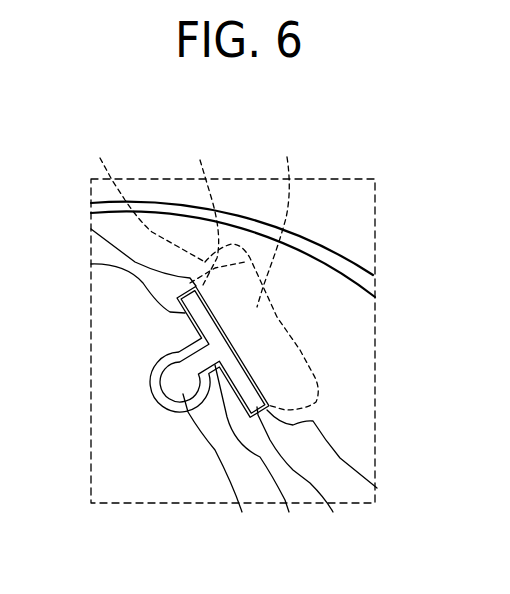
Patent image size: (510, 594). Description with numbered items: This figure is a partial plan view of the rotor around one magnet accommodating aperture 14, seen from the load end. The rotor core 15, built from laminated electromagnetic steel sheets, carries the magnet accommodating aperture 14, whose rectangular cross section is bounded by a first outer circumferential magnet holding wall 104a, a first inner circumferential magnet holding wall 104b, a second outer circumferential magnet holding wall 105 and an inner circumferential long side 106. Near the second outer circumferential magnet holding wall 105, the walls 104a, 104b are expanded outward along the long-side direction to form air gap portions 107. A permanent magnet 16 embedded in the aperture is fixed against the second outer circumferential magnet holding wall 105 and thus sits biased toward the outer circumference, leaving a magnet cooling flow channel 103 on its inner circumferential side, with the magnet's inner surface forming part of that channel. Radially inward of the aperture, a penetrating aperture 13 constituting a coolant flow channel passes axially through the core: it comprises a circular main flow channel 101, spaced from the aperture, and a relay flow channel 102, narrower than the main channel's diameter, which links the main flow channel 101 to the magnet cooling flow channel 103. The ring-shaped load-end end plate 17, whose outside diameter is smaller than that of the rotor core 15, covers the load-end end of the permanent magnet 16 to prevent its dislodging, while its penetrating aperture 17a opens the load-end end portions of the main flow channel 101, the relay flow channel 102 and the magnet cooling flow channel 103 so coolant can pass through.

The penetrating aperture 13 is at (267, 465).
The magnet accommodating aperture 14 is at (142, 199).
The rotor core 15 is at (320, 243).
The permanent magnet 16 is at (277, 223).
The load-end end plate 17 is at (350, 276).
The penetrating aperture 17a is at (159, 360).
The main flow channel 101 is at (223, 467).
The relay flow channel 102 is at (260, 453).
The magnet cooling flow channel 103 is at (302, 474).
The first outer circumferential magnet holding wall 104a is at (91, 229).
The first inner circumferential magnet holding wall 104b is at (348, 457).
The second outer circumferential magnet holding wall 105 is at (300, 350).
The inner circumferential long side 106 is at (91, 264).
The air gap portion 107 is at (201, 212).